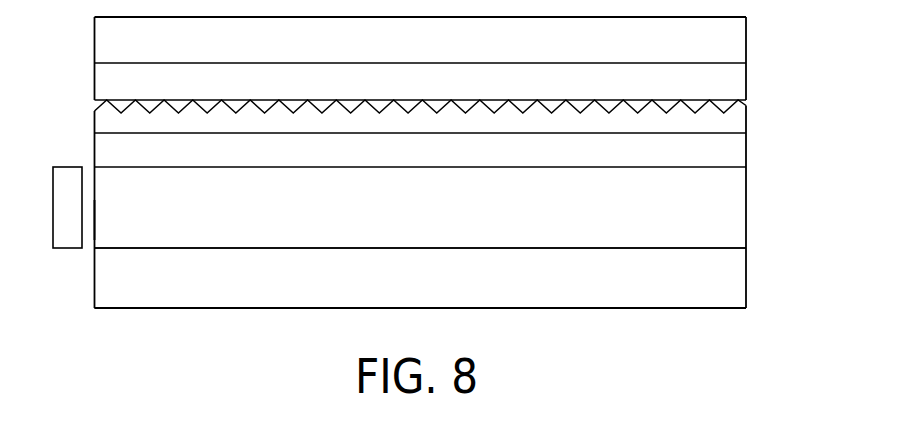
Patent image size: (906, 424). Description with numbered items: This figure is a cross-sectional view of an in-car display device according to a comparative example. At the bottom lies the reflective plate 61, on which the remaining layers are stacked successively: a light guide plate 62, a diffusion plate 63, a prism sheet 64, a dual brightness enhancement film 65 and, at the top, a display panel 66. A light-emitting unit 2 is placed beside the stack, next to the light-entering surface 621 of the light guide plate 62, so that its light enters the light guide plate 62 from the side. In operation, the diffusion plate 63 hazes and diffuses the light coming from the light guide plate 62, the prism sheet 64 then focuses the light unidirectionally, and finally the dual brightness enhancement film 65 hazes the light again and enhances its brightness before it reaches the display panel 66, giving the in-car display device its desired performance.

The display panel 66 is at (738, 39).
The dual brightness enhancement film 65 is at (738, 81).
The prism sheet 64 is at (738, 121).
The diffusion plate 63 is at (738, 149).
The light guide plate 62 is at (738, 211).
The reflective plate 61 is at (738, 286).
The light-emitting unit 2 is at (53, 235).
The light-entering surface 621 is at (94, 220).